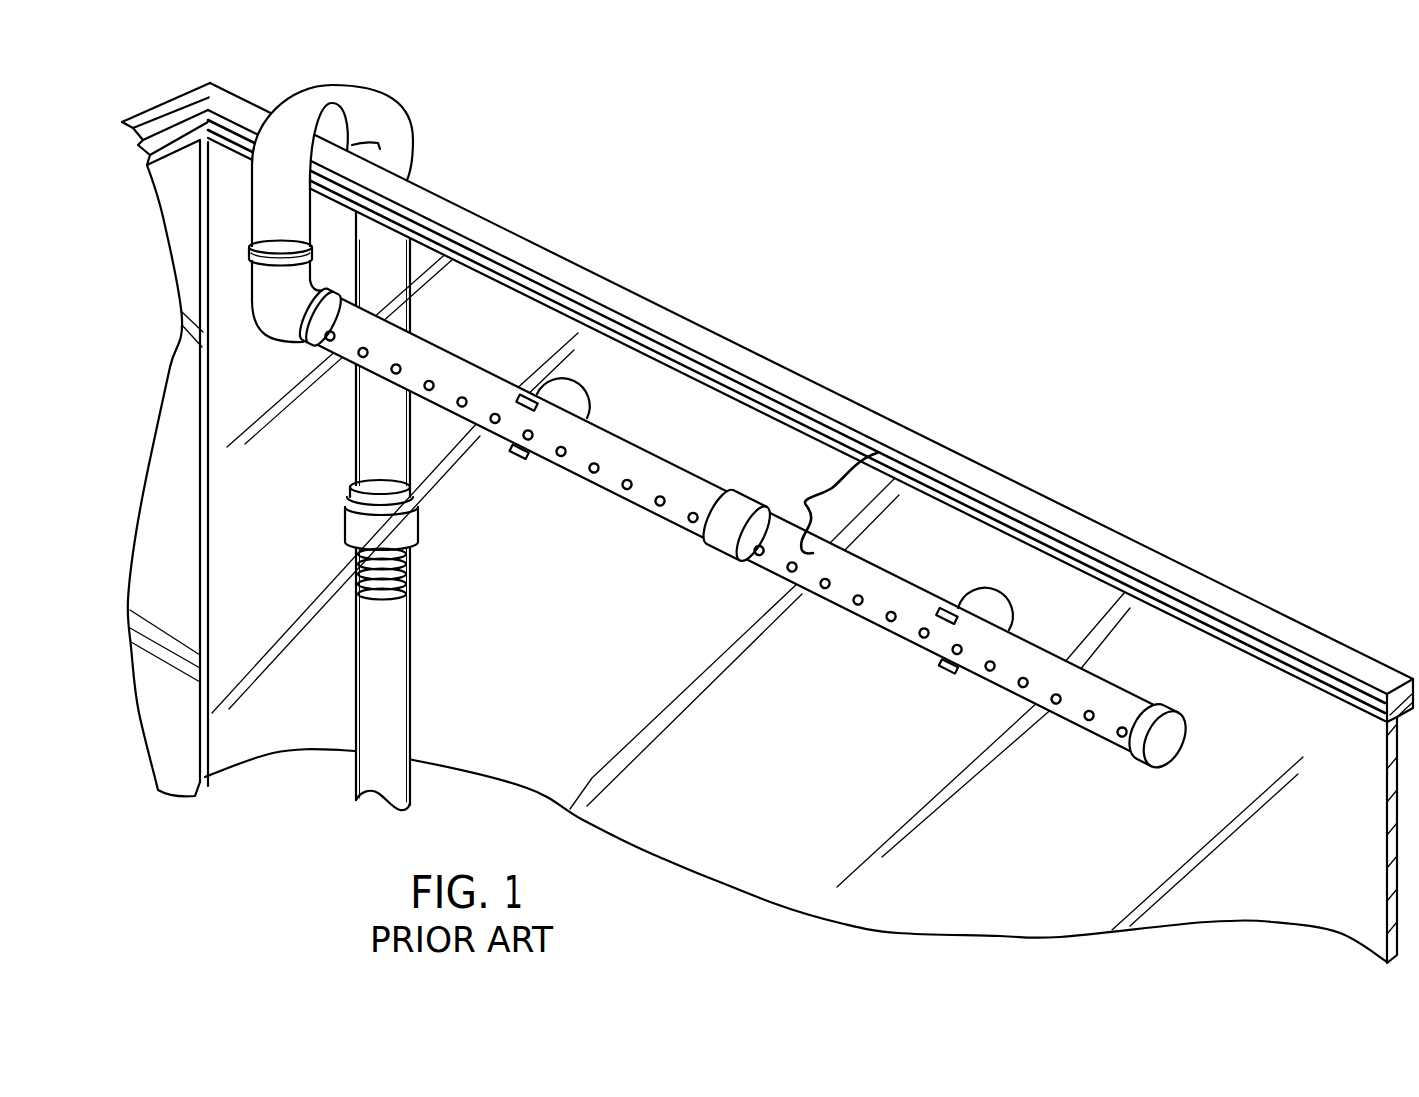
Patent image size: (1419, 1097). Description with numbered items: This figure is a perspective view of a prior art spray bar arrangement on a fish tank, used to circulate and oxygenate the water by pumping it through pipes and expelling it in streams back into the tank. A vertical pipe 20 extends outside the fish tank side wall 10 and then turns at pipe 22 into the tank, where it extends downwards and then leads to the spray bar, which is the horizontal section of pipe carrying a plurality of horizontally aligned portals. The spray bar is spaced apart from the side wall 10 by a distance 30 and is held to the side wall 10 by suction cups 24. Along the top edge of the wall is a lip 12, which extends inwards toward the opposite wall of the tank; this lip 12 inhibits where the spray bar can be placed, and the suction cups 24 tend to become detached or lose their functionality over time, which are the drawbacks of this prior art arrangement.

The fish tank side wall 10 is at (475, 290).
The lip 12 is at (542, 283).
The vertical pipe 20 is at (387, 137).
The pipe 22 is at (275, 200).
The suction cups 24 is at (573, 393).
The distance 30 is at (808, 480).